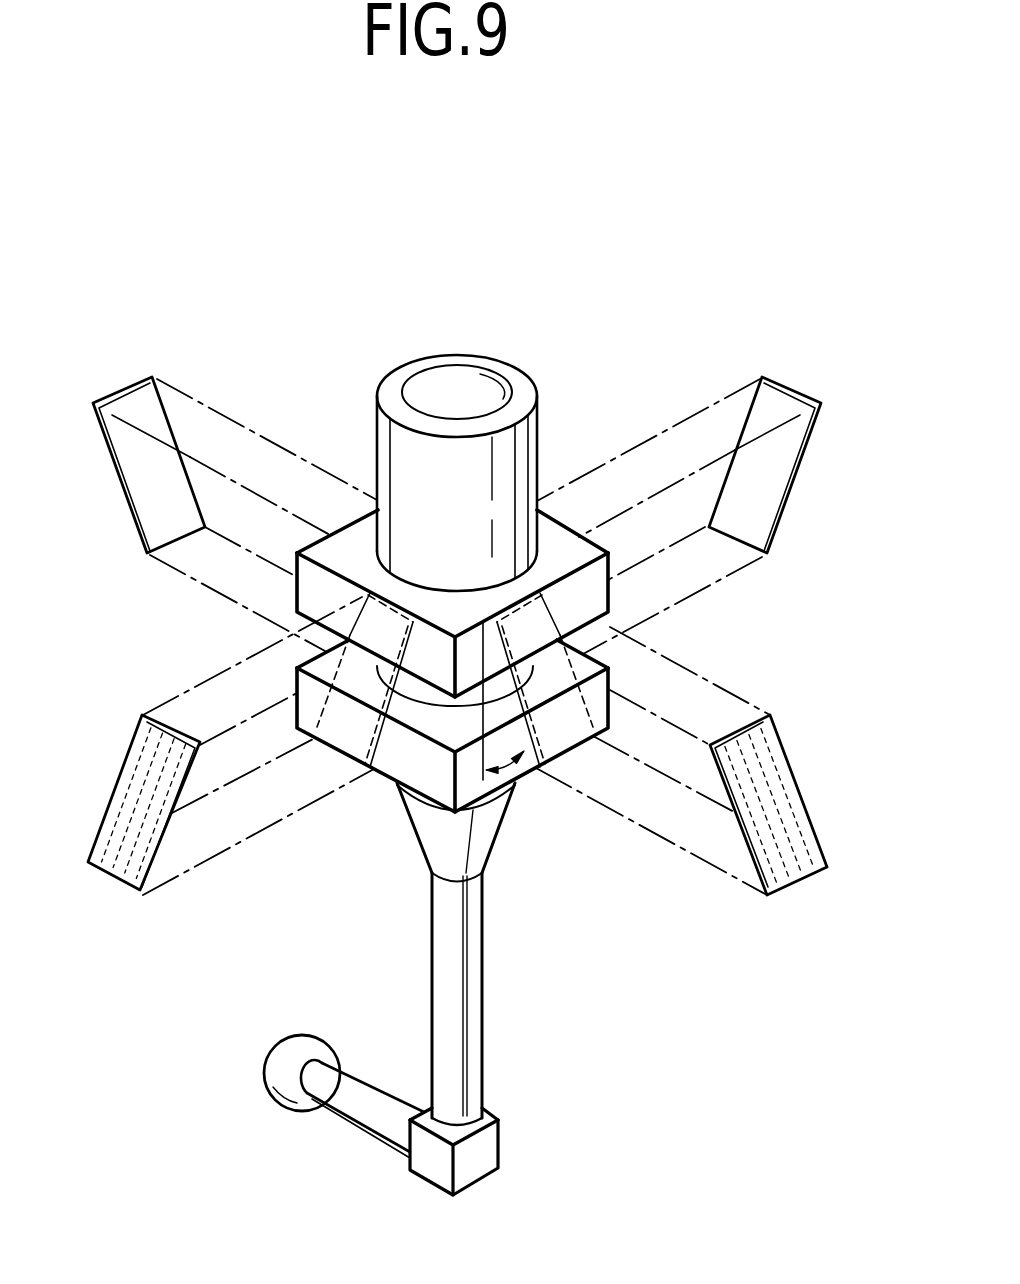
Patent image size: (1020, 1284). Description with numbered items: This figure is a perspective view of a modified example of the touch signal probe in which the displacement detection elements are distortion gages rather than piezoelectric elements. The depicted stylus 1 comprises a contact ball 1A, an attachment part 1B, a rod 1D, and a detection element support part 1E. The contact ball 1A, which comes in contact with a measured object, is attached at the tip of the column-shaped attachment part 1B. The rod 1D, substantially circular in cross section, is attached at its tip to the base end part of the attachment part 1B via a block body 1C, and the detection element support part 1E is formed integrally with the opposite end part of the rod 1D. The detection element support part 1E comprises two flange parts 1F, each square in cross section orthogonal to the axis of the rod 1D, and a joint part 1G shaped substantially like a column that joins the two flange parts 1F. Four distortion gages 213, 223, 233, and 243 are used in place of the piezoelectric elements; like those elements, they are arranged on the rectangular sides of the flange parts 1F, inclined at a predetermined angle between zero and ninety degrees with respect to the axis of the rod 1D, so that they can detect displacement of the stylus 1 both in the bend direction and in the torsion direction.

The stylus 1 is at (542, 306).
The contact ball 1A is at (270, 1103).
The attachment part 1B is at (353, 1105).
The block body 1C is at (488, 1147).
The rod 1D is at (467, 1042).
The detection element support part 1E is at (362, 804).
The flange part 1F is at (563, 543).
The joint part 1G is at (425, 692).
The distortion gage 213 is at (122, 860).
The distortion gage 223 is at (797, 863).
The distortion gage 233 is at (768, 483).
The distortion gage 243 is at (138, 397).